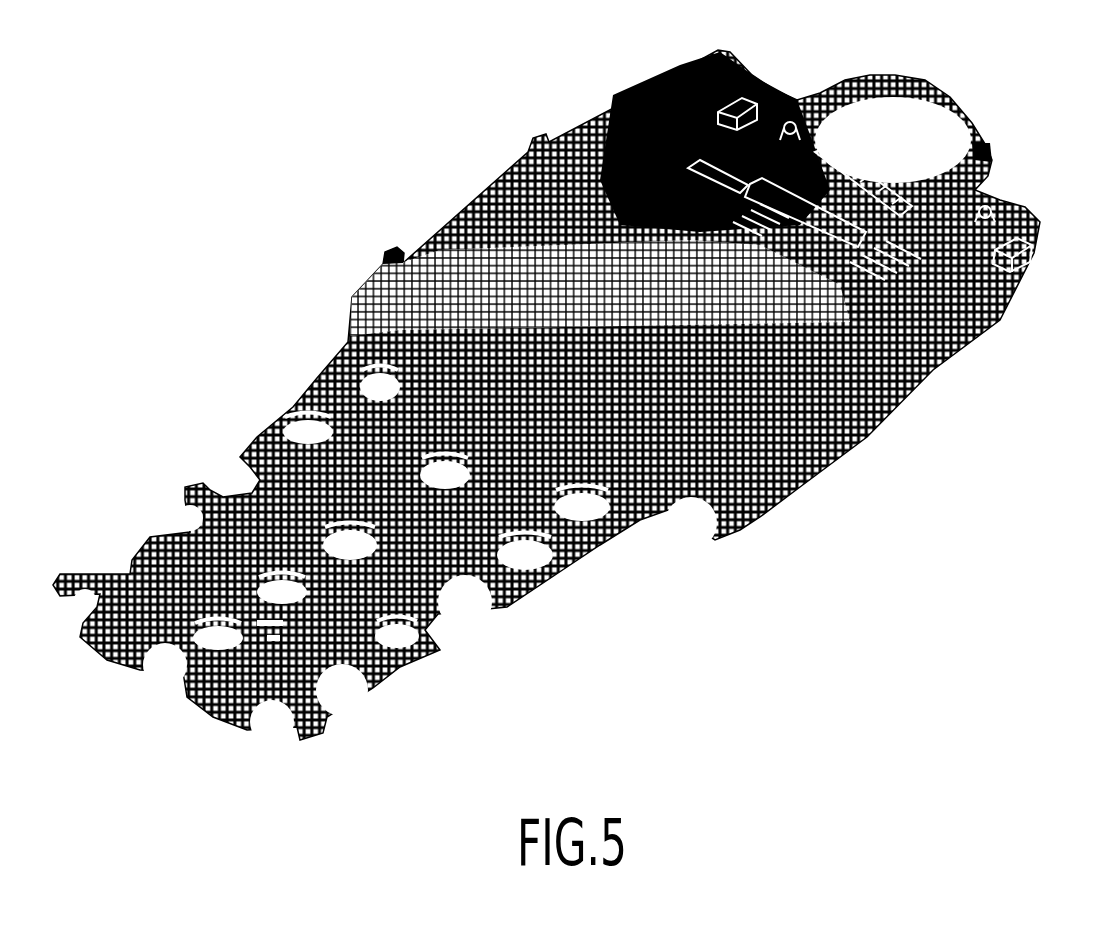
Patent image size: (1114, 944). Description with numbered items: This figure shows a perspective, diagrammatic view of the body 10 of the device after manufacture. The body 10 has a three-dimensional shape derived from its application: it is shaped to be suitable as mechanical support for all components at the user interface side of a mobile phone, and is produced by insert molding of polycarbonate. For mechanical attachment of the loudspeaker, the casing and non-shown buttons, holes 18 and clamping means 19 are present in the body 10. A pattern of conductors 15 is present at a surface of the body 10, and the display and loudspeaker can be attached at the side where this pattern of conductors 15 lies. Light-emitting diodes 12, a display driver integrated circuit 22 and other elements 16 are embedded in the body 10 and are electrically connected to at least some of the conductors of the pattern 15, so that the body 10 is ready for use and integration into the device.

The body 10 is at (318, 156).
The light-emitting diodes 12 is at (722, 88).
The pattern of conductors 15 is at (752, 233).
The other elements 16 is at (790, 125).
The holes 18 is at (912, 138).
The clamping means 19 is at (385, 258).
The display driver integrated circuit 22 is at (842, 257).